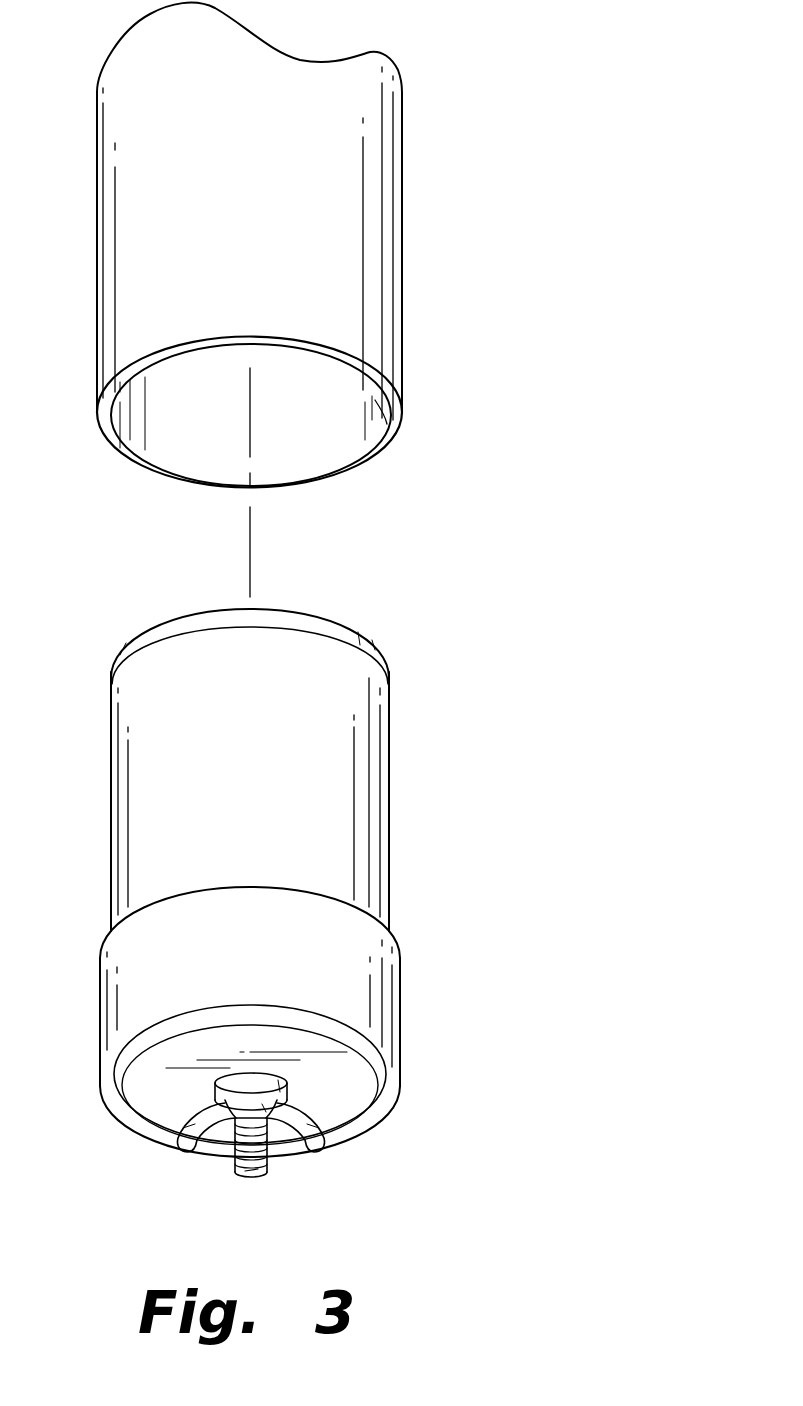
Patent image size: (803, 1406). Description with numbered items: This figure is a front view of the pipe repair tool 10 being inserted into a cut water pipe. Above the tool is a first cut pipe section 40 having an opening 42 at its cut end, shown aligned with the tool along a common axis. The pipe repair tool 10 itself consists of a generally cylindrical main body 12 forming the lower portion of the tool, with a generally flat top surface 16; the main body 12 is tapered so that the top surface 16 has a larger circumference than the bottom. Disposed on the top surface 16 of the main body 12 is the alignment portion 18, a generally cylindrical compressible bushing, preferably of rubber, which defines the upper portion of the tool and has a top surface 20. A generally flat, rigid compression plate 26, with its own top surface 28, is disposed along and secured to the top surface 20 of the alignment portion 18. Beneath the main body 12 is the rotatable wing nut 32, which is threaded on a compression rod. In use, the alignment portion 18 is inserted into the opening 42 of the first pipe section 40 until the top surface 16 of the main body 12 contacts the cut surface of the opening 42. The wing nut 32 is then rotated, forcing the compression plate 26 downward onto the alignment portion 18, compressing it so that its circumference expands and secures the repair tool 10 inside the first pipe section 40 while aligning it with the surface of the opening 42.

The pipe repair tool 10 is at (330, 890).
The main body 12 is at (388, 998).
The top surface of the main body 16 is at (163, 898).
The alignment portion 18 is at (375, 818).
The top surface of the alignment portion 20 is at (150, 643).
The compression plate 26 is at (380, 654).
The top surface of the compression plate 28 is at (318, 601).
The wing nut 32 is at (323, 1120).
The first cut pipe section 40 is at (388, 188).
The opening 42 is at (400, 425).